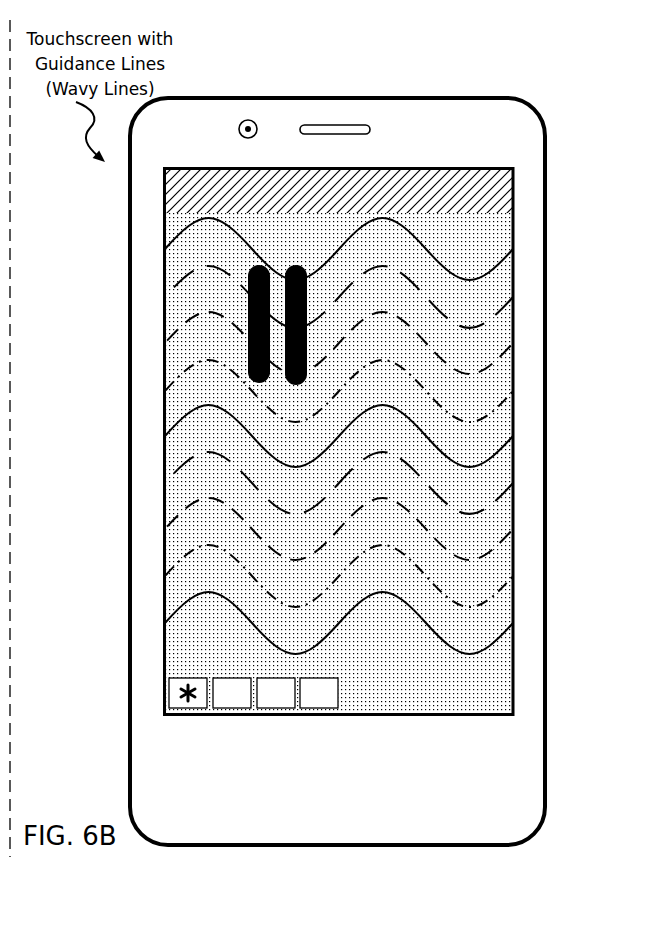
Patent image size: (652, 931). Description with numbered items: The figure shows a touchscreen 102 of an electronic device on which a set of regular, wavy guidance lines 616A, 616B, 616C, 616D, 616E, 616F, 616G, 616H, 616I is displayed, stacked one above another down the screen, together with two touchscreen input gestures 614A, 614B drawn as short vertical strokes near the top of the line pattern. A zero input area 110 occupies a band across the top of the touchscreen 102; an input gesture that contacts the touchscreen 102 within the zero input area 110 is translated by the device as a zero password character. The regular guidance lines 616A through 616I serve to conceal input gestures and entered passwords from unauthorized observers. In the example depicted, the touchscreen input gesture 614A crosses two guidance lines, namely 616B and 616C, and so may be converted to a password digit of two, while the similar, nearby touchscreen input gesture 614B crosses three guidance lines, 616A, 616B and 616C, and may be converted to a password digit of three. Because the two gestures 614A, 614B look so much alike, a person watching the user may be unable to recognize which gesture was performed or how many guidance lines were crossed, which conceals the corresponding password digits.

The touchscreen 102 is at (163, 169).
The "0" input area 110 is at (228, 203).
The touchscreen input gesture 614A is at (255, 268).
The touchscreen input gesture 614B is at (304, 255).
The regular guidance line 616A is at (173, 238).
The regular guidance line 616B is at (178, 281).
The regular guidance line 616C is at (178, 333).
The regular guidance line 616D is at (178, 370).
The regular guidance line 616E is at (170, 423).
The regular guidance line 616F is at (178, 463).
The regular guidance line 616G is at (178, 518).
The regular guidance line 616H is at (178, 555).
The regular guidance line 616I is at (170, 607).